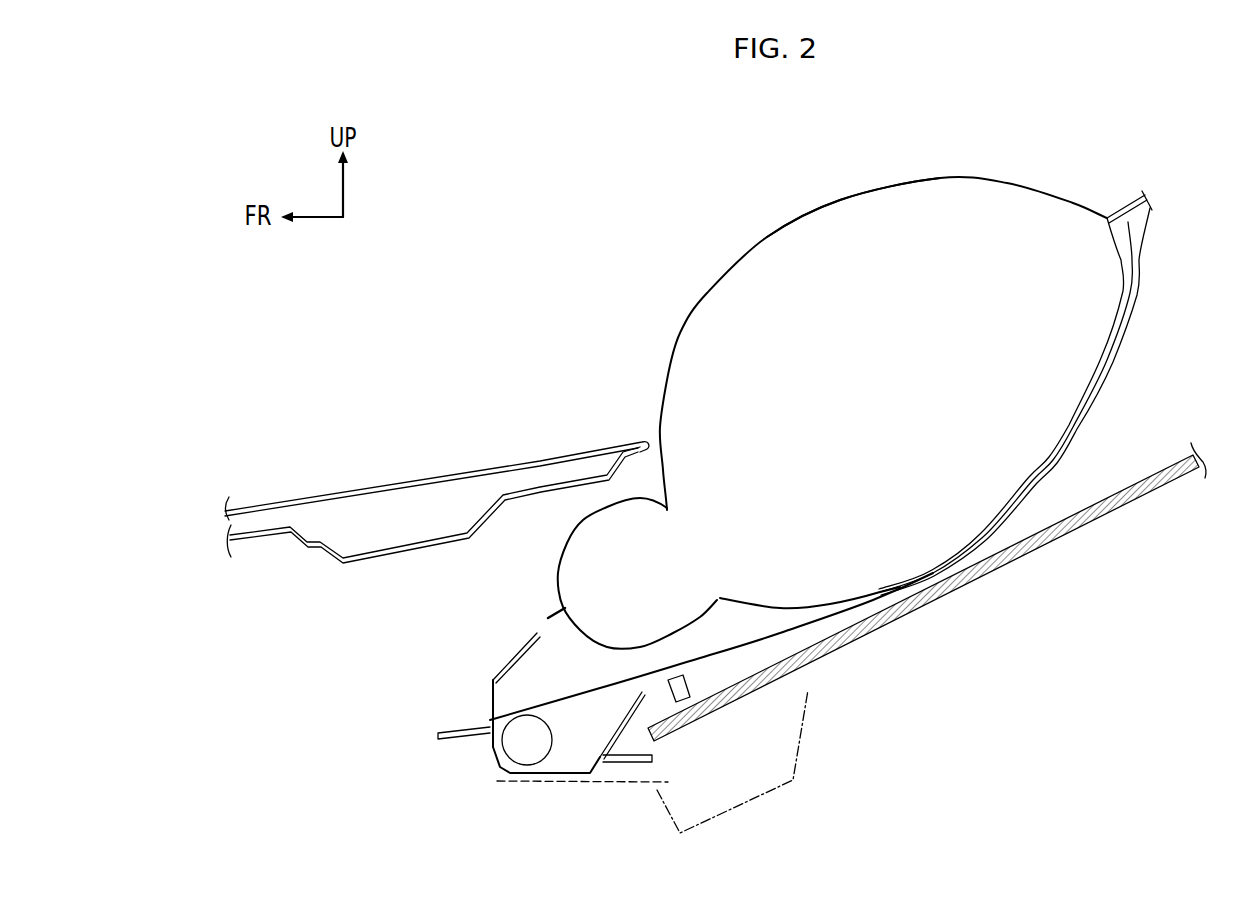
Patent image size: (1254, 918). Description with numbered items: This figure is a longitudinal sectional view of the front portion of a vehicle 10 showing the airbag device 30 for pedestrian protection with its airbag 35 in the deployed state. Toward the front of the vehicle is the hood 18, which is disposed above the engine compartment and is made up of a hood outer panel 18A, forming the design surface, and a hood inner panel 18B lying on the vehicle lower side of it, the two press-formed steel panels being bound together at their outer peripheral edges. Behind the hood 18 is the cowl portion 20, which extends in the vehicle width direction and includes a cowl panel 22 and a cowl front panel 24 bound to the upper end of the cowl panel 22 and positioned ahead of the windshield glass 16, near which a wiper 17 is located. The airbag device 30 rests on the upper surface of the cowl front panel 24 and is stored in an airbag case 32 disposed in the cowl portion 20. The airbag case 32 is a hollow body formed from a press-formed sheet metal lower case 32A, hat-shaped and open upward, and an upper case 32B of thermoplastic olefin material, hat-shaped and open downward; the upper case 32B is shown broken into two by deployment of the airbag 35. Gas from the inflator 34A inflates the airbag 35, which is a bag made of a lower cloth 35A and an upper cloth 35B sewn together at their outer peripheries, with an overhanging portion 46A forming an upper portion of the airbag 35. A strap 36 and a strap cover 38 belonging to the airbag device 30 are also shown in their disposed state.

The vehicle 10 is at (603, 176).
The windshield glass 16 is at (1153, 460).
The wiper 17 is at (687, 677).
The hood 18 is at (437, 513).
The hood outer panel 18A is at (377, 490).
The hood inner panel 18B is at (387, 557).
The cowl portion 20 is at (488, 793).
The cowl panel 22 is at (663, 807).
The cowl front panel 24 is at (607, 787).
The airbag device 30 is at (883, 378).
The airbag case 32 is at (519, 704).
The lower case 32A is at (483, 740).
The upper case 32B is at (500, 673).
The inflator 34A is at (487, 752).
The airbag 35 is at (827, 378).
The lower cloth 35A is at (775, 615).
The upper cloth 35B is at (770, 232).
The strap 36 is at (573, 700).
The strap cover 38 is at (1130, 333).
The overhanging portion 46A is at (1135, 226).